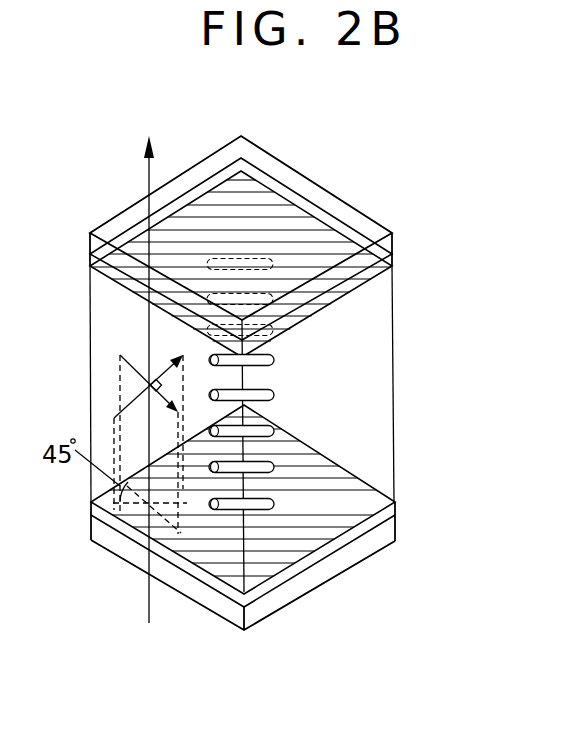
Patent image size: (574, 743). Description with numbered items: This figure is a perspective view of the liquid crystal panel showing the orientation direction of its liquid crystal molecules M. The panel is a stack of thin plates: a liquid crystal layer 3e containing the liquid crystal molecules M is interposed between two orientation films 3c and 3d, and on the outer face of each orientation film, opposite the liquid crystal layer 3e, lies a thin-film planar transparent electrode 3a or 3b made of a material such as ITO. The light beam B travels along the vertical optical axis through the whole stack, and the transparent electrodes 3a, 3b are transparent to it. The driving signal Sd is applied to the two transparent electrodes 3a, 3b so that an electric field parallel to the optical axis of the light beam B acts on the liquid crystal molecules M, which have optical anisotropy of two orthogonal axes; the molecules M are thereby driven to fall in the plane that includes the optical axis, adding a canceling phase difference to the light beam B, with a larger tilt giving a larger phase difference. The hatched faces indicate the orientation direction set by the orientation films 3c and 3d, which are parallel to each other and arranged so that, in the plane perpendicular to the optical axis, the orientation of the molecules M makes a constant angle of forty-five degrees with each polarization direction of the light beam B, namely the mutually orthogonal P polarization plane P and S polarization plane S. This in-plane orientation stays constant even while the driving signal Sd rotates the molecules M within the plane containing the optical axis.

The transparent electrode 3a is at (336, 196).
The transparent electrode 3b is at (385, 547).
The orientation film 3c is at (396, 262).
The orientation film 3d is at (396, 511).
The liquid crystal layer 3e is at (396, 360).
The light beam B is at (148, 165).
The driving signal Sd is at (400, 242).
The liquid crystal molecules M is at (275, 362).
The S polarization plane S is at (157, 376).
The P polarization plane P is at (159, 391).